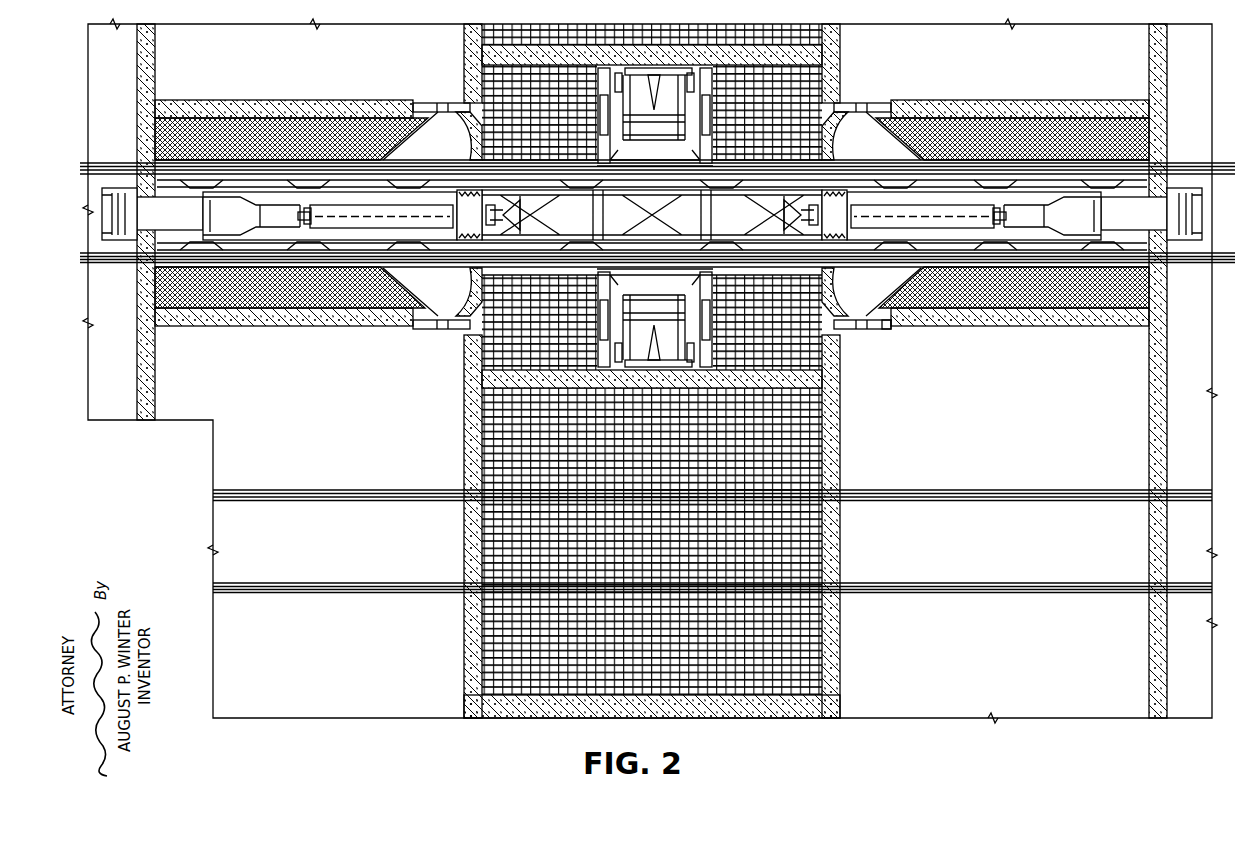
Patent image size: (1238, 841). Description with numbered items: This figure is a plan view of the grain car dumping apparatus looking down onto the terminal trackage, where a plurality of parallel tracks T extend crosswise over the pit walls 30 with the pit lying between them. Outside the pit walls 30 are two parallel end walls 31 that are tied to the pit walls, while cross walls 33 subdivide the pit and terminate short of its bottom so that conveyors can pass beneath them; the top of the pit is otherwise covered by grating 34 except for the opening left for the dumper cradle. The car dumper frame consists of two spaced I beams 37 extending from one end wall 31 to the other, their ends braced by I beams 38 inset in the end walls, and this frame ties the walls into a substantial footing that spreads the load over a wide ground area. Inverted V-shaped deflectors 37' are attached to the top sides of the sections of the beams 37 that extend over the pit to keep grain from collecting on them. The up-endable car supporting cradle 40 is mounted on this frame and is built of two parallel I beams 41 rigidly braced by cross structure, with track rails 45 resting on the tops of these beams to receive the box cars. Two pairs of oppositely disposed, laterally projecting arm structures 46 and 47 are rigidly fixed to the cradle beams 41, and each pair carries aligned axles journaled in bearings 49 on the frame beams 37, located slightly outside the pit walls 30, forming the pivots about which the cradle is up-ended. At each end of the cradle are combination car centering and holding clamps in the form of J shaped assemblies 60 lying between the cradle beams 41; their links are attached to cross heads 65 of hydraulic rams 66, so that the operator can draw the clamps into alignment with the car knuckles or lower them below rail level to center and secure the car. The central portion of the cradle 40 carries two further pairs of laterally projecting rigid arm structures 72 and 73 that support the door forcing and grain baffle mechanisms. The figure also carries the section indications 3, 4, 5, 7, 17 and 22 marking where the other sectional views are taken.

The pit walls 30 is at (466, 526).
The end walls 31 is at (140, 414).
The cross walls 33 is at (482, 378).
The grating 34 is at (470, 668).
The I beams 37 is at (652, 216).
The inverted V-shaped deflectors 37' is at (916, 351).
The I beams 38 is at (137, 140).
The car supporting cradle 40 is at (432, 268).
The I beams 41 is at (866, 166).
The track rails 45 is at (472, 160).
The arm structures 46 is at (440, 150).
The arm structures 47 is at (868, 153).
The bearings 49 is at (440, 103).
The J shaped assemblies 60 is at (198, 220).
The cross heads 65 is at (550, 207).
The hydraulic rams 66 is at (310, 218).
The arm structures 72 is at (700, 148).
The arm structures 73 is at (700, 287).
The tracks T is at (1210, 172).
The section line 3- 3 is at (102, 235).
The section line 4- 4 is at (842, 57).
The section line 5- 5 is at (285, 62).
The section line 7- 7 is at (442, 90).
The section line 17- 17 is at (717, 18).
The section line 22- 22 is at (595, 18).